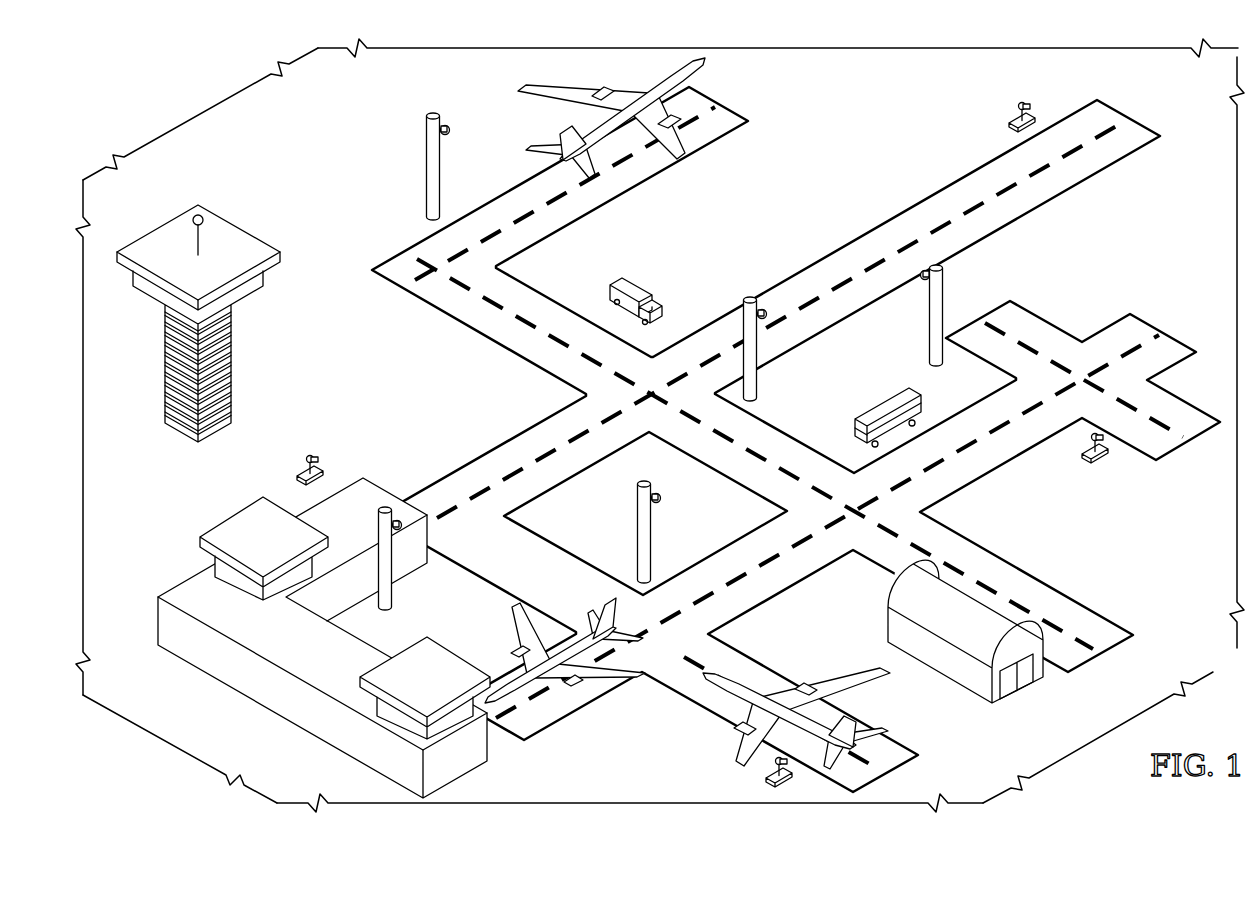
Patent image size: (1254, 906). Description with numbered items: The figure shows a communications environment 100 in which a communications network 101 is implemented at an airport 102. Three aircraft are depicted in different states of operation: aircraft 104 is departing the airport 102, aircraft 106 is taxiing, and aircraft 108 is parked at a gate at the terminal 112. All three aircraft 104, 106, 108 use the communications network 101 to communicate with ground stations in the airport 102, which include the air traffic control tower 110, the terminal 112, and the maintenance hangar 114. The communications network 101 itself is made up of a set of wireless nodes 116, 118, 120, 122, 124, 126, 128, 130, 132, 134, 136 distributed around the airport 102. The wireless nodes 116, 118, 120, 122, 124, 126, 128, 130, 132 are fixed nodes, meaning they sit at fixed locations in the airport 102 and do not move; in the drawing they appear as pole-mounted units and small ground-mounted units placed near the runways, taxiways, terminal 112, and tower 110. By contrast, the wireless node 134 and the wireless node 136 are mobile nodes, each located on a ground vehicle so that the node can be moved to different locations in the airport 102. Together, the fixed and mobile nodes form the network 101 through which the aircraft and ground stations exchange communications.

The communications environment 100 is at (168, 93).
The communications network 101 is at (406, 99).
The airport 102 is at (331, 206).
The aircraft 104 is at (704, 65).
The aircraft 106 is at (753, 683).
The aircraft 108 is at (505, 668).
The air traffic control tower 110 is at (152, 232).
The terminal 112 is at (181, 584).
The maintenance hangar 114 is at (1007, 699).
The wireless node 116 is at (426, 140).
The wireless node 118 is at (303, 463).
The wireless node 120 is at (378, 518).
The wireless node 122 is at (1017, 106).
The wireless node 124 is at (743, 308).
The wireless node 126 is at (637, 505).
The wireless node 128 is at (767, 787).
The wireless node 130 is at (943, 292).
The wireless node 132 is at (1100, 458).
The wireless node 134 is at (630, 292).
The wireless node 136 is at (892, 398).